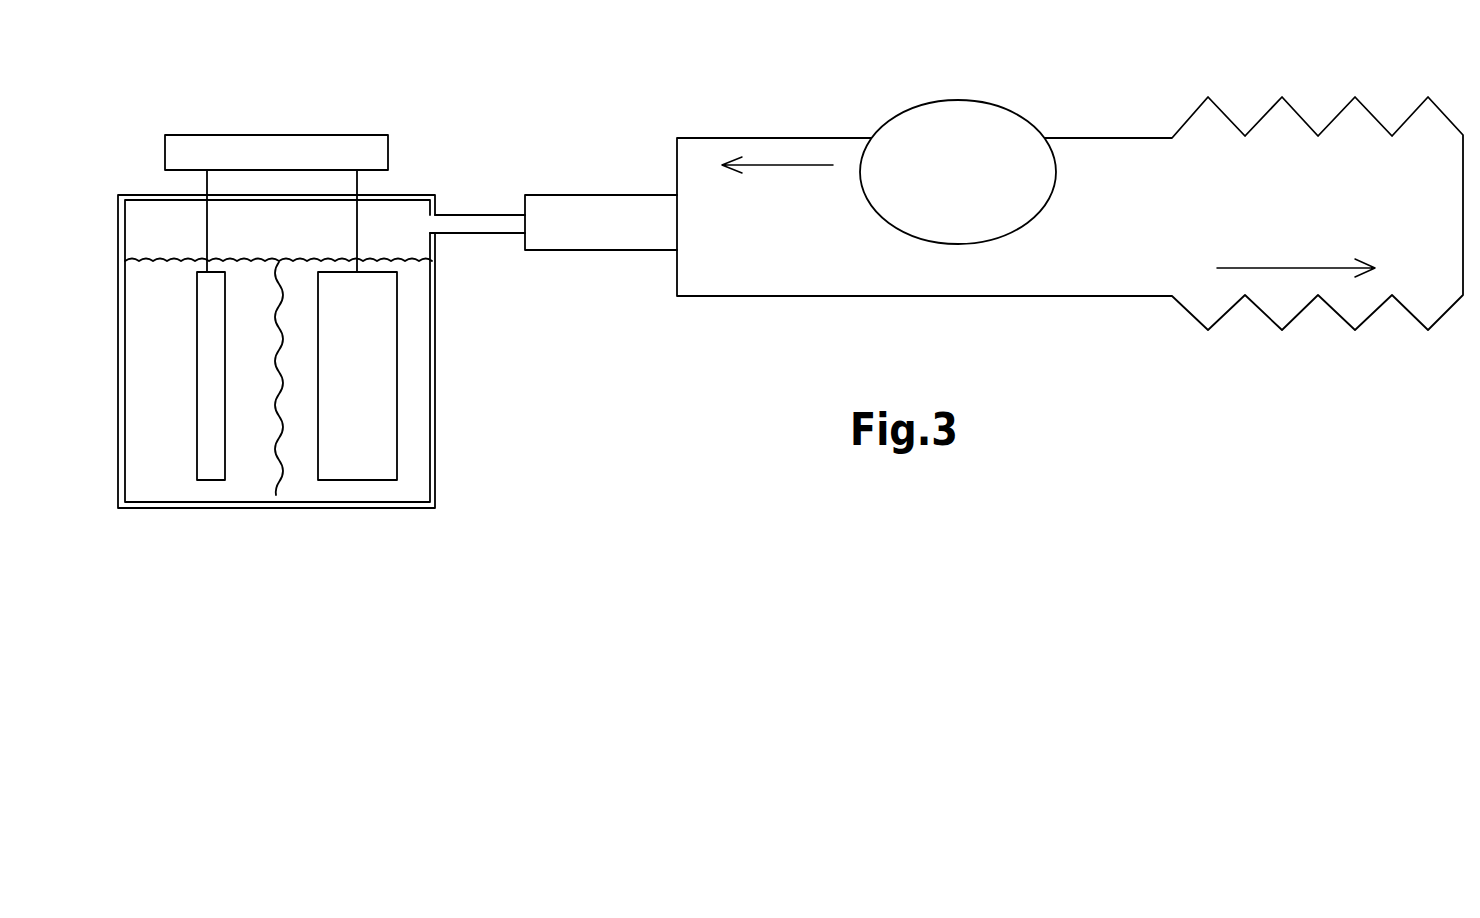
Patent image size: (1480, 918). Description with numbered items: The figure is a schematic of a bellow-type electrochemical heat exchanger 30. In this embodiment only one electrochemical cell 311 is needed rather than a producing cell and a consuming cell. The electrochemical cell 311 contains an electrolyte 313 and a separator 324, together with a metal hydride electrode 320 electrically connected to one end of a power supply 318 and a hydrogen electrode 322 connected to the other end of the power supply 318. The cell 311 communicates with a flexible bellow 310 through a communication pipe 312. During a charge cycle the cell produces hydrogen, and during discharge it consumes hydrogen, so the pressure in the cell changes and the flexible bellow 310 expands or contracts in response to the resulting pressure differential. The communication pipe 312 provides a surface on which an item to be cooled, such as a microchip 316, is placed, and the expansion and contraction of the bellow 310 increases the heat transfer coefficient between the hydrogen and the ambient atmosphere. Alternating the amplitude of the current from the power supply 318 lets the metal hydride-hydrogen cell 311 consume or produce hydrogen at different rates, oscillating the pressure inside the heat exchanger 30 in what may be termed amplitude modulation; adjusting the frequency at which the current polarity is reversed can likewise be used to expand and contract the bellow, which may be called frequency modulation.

The electrochemical heat exchanger 30 is at (552, 176).
The flexible bellow 310 is at (1370, 112).
The electrochemical cell 311 is at (415, 405).
The communication pipe 312 is at (574, 250).
The electrolyte 313 is at (160, 435).
The microchip 316 is at (943, 107).
The power supply 318 is at (228, 135).
The metal hydride electrode 320 is at (225, 390).
The hydrogen electrode 322 is at (315, 405).
The separator 324 is at (268, 490).